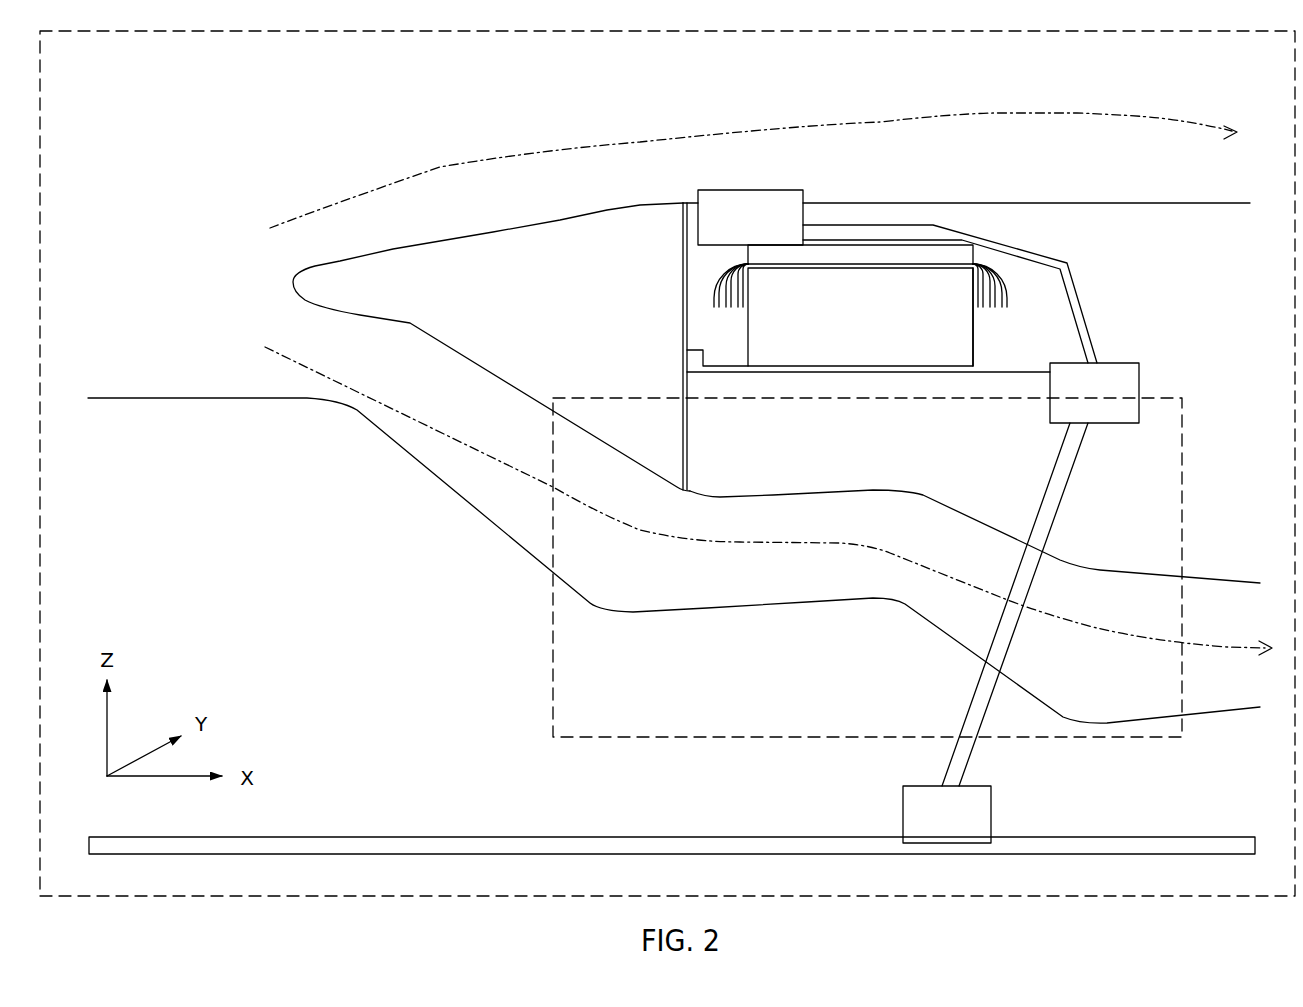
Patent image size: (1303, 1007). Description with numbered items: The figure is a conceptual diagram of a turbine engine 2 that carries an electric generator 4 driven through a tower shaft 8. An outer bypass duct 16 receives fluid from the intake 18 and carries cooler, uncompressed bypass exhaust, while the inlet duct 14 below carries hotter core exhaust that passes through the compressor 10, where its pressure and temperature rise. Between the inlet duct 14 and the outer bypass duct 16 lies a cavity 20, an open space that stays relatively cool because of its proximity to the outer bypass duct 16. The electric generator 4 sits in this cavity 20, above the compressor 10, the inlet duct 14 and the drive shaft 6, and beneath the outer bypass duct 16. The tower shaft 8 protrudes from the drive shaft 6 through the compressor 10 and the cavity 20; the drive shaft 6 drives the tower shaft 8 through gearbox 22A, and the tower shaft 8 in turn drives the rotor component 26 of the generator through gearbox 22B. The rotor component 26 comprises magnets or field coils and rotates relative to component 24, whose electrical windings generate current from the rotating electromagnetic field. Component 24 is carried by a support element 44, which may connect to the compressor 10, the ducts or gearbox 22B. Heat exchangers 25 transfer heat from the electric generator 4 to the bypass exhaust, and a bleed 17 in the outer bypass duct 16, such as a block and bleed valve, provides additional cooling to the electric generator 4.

The turbine engine 2 is at (65, 91).
The electric generator 4 is at (868, 360).
The drive shaft 6 is at (625, 854).
The tower shaft 8 is at (1047, 492).
The compressor 10 is at (592, 728).
The inlet duct 14 is at (300, 331).
The outer bypass duct 16 is at (612, 106).
The bleed 17 is at (763, 240).
The intake 18 is at (132, 209).
The cavity 20 is at (1139, 289).
The gearbox 22A is at (969, 840).
The gearbox 22B is at (1118, 416).
The component 24 is at (973, 325).
The heat exchangers 25 is at (745, 251).
The component 26 is at (882, 224).
The support element 44 is at (683, 348).